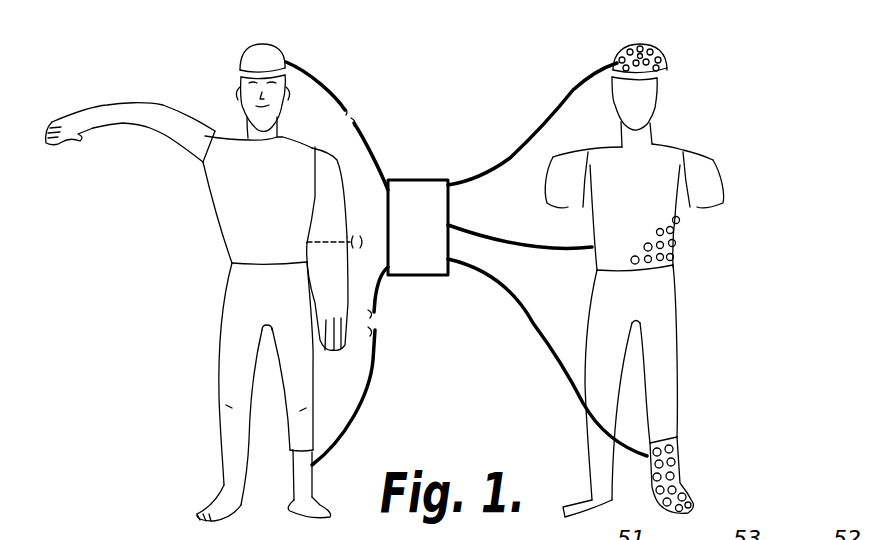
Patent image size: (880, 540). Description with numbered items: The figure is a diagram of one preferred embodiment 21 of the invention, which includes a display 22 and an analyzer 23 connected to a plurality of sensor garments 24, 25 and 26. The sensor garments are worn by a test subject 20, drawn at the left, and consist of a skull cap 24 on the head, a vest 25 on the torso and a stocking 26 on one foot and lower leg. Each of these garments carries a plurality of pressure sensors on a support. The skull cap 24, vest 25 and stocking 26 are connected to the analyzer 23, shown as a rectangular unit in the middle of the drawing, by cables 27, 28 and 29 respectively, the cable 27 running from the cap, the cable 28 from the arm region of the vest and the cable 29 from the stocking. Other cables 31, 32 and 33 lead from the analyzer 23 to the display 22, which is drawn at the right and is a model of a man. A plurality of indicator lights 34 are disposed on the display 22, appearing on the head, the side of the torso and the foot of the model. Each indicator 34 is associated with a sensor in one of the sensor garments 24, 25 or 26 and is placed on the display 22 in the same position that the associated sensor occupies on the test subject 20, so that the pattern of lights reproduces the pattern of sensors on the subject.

The test subject 20 is at (241, 124).
The preferred embodiment 21 is at (489, 72).
The display 22 is at (713, 160).
The analyzer 23 is at (423, 180).
The skull cap 24 is at (268, 44).
The vest 25 is at (220, 230).
The stocking 26 is at (325, 495).
The cable 27 is at (340, 95).
The cable 28 is at (354, 236).
The cable 29 is at (380, 343).
The cable 31 is at (543, 123).
The cable 32 is at (513, 240).
The cable 33 is at (530, 323).
The indicator lights 34 is at (660, 50).